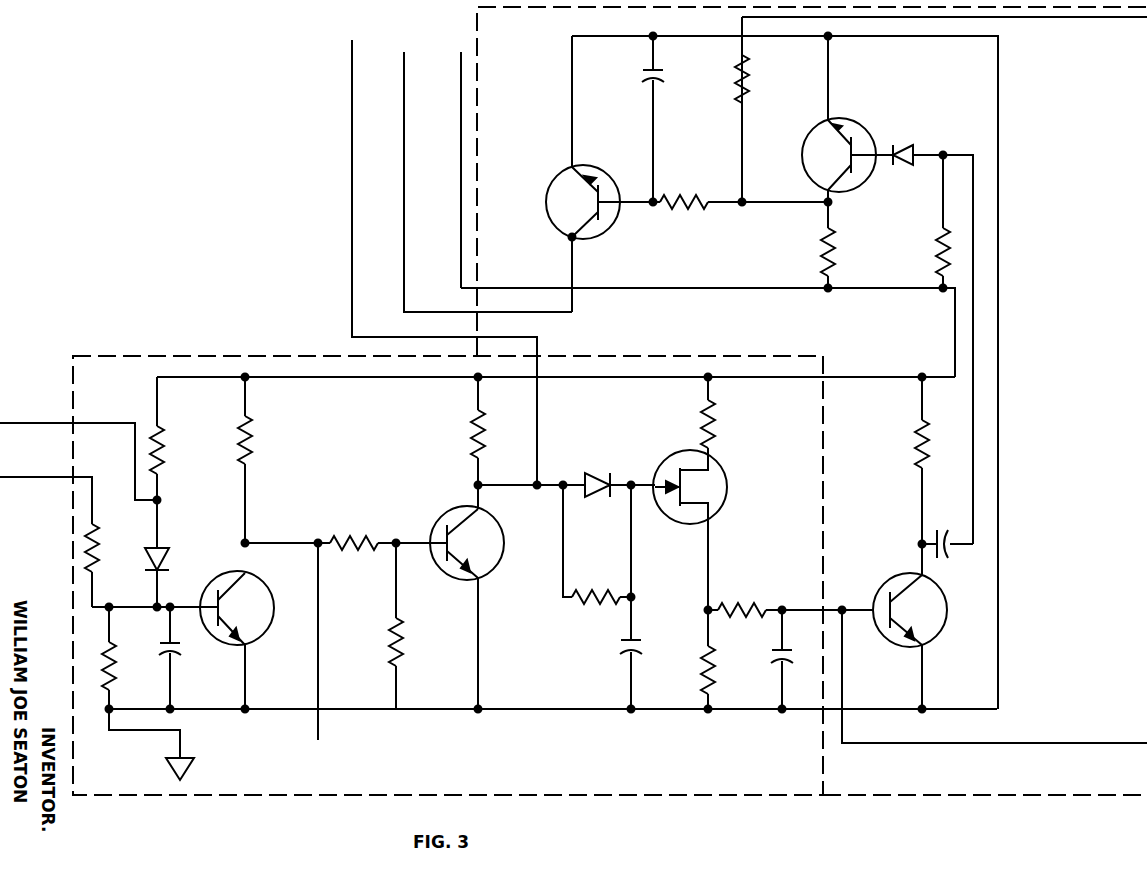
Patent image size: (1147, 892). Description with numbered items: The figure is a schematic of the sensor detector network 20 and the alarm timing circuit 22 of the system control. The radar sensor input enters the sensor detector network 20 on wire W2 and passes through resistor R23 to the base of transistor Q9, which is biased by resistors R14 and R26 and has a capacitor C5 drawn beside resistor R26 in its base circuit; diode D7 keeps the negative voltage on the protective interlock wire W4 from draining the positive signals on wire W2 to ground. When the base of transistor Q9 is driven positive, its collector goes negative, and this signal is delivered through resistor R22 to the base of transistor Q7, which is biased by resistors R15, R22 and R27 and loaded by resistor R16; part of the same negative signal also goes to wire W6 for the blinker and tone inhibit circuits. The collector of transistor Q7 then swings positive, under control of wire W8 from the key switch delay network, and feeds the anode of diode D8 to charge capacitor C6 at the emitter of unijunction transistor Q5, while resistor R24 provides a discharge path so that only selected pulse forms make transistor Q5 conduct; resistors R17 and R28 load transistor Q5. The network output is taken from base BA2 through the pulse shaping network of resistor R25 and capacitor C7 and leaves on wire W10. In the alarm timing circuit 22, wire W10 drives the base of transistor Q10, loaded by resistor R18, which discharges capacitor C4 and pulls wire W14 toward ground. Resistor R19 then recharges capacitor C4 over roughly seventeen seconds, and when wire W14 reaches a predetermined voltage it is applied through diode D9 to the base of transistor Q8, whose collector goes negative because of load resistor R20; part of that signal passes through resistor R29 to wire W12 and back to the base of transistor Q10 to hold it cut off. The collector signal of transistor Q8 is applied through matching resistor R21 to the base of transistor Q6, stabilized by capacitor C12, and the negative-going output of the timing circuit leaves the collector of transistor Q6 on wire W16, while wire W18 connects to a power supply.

The sensor detector network 20 is at (162, 357).
The alarm timing circuit 22 is at (1028, 795).
The wire W2 is at (20, 477).
The protective interlock wire W4 is at (16, 423).
The wire W6 is at (318, 744).
The wire W8 is at (352, 150).
The wire W10 is at (842, 606).
The wire W12 is at (1112, 20).
The wire W14 is at (975, 455).
The wire W16 is at (404, 64).
The wire W18 is at (461, 85).
The resistor R14 is at (166, 466).
The resistor R15 is at (256, 450).
The resistor R16 is at (470, 448).
The resistor R17 is at (714, 424).
The resistor R18 is at (916, 460).
The resistor R19 is at (935, 265).
The load resistor R20 is at (820, 248).
The matching resistor R21 is at (690, 210).
The resistor R22 is at (345, 540).
The resistor R23 is at (98, 556).
The resistor R24 is at (586, 604).
The resistor R25 is at (750, 606).
The resistor R26 is at (118, 664).
The resistor R27 is at (400, 645).
The resistor R28 is at (722, 668).
The resistor R29 is at (748, 84).
The capacitor C4 is at (954, 550).
The capacitor C5 is at (178, 656).
The capacitor C6 is at (640, 656).
The capacitor C7 is at (788, 658).
The capacitor C12 is at (658, 82).
The diode D7 is at (162, 556).
The diode D8 is at (592, 472).
The diode D9 is at (912, 148).
The unijunction transistor Q5 is at (727, 492).
The transistor Q6 is at (550, 182).
The transistor Q7 is at (442, 520).
The transistor Q8 is at (848, 118).
The transistor Q9 is at (258, 590).
The transistor Q10 is at (887, 585).
The base BA2 is at (710, 552).